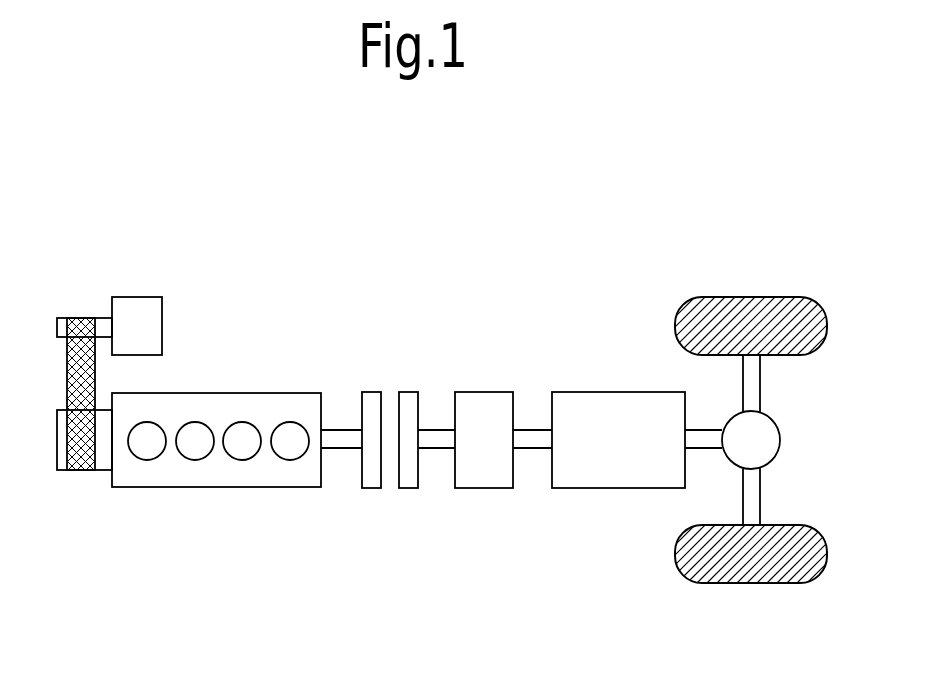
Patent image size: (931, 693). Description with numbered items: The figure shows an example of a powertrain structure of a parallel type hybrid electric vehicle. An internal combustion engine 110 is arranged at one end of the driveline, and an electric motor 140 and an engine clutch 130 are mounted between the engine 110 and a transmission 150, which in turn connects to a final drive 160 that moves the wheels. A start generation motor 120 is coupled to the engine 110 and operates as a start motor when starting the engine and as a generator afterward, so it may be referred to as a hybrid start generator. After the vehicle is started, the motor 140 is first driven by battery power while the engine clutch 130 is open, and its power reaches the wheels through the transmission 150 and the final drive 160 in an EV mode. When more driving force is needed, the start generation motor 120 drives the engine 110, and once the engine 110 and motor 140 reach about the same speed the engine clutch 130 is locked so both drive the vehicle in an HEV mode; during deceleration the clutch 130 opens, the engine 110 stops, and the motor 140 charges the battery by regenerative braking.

The internal combustion engine 110 is at (285, 392).
The start generation motor 120 is at (163, 312).
The engine clutch 130 is at (417, 390).
The electric motor 140 is at (488, 390).
The transmission 150 is at (650, 390).
The final drive 160 is at (782, 423).